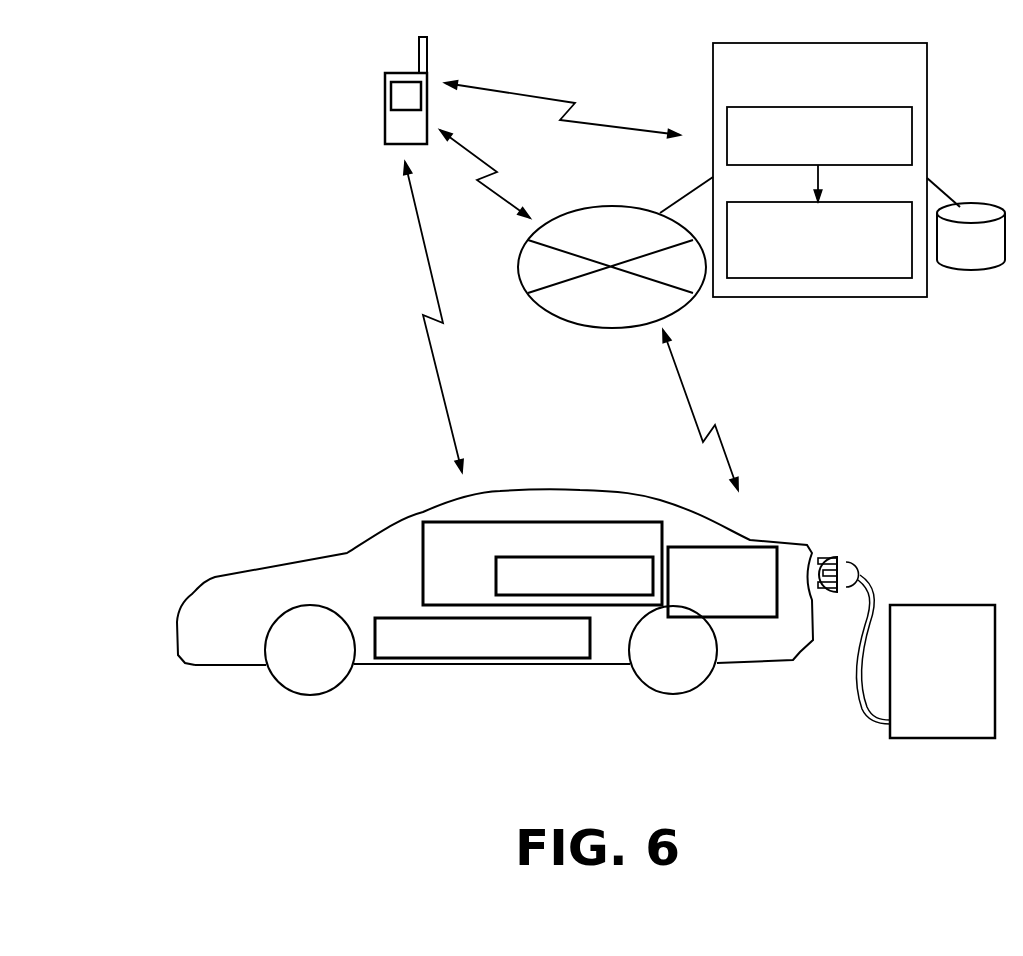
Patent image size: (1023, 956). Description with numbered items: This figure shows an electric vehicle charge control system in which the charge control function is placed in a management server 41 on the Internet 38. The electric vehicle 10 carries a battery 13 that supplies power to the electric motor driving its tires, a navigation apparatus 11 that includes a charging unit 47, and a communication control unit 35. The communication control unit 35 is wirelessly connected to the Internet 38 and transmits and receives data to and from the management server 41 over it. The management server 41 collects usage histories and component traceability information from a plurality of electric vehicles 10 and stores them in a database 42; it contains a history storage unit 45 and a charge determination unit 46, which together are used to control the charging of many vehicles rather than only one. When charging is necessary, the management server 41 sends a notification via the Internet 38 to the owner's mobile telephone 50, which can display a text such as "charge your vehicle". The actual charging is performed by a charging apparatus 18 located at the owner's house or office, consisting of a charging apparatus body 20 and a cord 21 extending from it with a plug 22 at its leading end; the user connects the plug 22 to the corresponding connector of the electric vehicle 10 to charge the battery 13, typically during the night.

The electric vehicle 10 is at (420, 490).
The navigation apparatus 11 is at (547, 522).
The battery 13 is at (474, 658).
The charging apparatus 18 is at (906, 650).
The charging apparatus body 20 is at (944, 740).
The cord 21 is at (877, 578).
The plug 22 is at (855, 556).
The communication control unit 35 is at (736, 547).
The Internet 38 is at (608, 205).
The management server 41 is at (820, 156).
The database 42 is at (970, 203).
The history storage unit 45 is at (865, 107).
The charge determination unit 46 is at (865, 202).
The charging unit 47 is at (647, 557).
The mobile telephone 50 is at (382, 92).